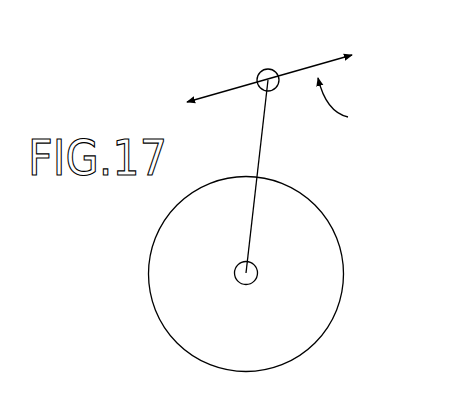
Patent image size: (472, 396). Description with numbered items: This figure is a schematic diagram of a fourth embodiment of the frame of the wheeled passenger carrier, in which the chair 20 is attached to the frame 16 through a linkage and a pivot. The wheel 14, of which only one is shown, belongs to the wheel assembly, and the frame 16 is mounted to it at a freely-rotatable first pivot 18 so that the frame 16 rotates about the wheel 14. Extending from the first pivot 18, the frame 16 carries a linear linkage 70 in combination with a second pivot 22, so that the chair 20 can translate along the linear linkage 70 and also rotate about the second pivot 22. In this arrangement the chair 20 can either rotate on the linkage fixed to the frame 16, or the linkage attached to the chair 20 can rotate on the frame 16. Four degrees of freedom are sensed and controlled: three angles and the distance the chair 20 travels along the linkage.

The wheels 14 is at (343, 268).
The frame 16 is at (258, 165).
The first pivot 18 is at (252, 273).
The chair 20 is at (305, 67).
The second pivot 22 is at (265, 87).
The linear linkage 70 is at (343, 111).